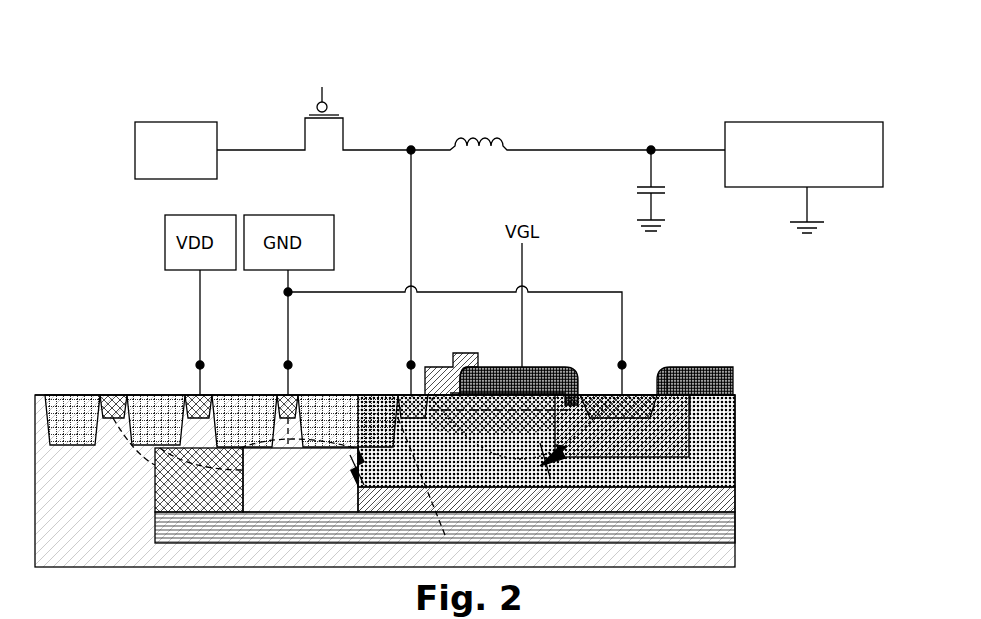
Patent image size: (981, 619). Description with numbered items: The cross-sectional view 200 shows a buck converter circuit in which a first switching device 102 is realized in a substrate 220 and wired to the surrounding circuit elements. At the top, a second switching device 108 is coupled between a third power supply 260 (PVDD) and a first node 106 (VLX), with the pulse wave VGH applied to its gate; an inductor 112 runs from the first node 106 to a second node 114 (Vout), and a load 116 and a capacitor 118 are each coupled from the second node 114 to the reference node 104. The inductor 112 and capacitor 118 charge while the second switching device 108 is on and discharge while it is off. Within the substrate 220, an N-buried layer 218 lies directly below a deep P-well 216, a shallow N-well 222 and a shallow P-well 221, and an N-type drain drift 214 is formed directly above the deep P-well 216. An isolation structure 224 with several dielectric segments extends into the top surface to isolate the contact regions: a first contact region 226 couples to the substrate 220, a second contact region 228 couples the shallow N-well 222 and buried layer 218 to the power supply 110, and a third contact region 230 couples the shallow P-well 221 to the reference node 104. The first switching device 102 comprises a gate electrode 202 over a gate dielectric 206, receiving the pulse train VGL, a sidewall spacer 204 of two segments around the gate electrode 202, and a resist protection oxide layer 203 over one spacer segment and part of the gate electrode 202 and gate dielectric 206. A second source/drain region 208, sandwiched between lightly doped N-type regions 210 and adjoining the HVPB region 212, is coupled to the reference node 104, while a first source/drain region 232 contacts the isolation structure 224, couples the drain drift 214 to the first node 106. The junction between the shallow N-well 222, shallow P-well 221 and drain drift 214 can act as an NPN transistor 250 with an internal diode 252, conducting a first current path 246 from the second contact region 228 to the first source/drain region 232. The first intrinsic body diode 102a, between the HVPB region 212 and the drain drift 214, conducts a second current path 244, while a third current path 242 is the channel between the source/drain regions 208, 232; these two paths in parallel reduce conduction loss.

The cross-sectional view 200 is at (906, 86).
The third power supply 260 is at (135, 149).
The second switching device 108 is at (296, 103).
The first node 106 is at (405, 360).
The inductor 112 is at (478, 145).
The second node 114 is at (651, 148).
The capacitor 118 is at (663, 195).
The reference node 104 is at (657, 232).
The load 116 is at (860, 182).
The power supply 110 is at (197, 362).
The first switching device 102 is at (588, 352).
The first intrinsic body diode 102a is at (572, 465).
The gate electrode 202 is at (520, 368).
The resist protection oxide layer 203 is at (442, 372).
The sidewall spacer 204 is at (573, 365).
The gate dielectric 206 is at (475, 397).
The second source/drain region 208 is at (628, 413).
The lightly doped N-type regions 210 is at (668, 403).
The high voltage P-type implanted (HVPB) region 212 is at (677, 443).
The N-type drain drift (NDD) 214 is at (727, 470).
The deep P-well (DPW) 216 is at (727, 498).
The N-buried layer (NBL) 218 is at (727, 528).
The substrate 220 is at (727, 555).
The shallow P-well (SHP) 221 is at (252, 485).
The shallow N-well (SHN) 222 is at (170, 495).
The isolation structure 224 is at (70, 410).
The first contact region 226 is at (115, 418).
The second contact region 228 is at (205, 400).
The third contact region 230 is at (286, 398).
The first source/drain region 232 is at (412, 400).
The third current path 242 is at (514, 436).
The second current path 244 is at (530, 466).
The first current path 246 is at (158, 470).
The NPN transistor 250 is at (302, 470).
The internal diode 252 is at (346, 484).